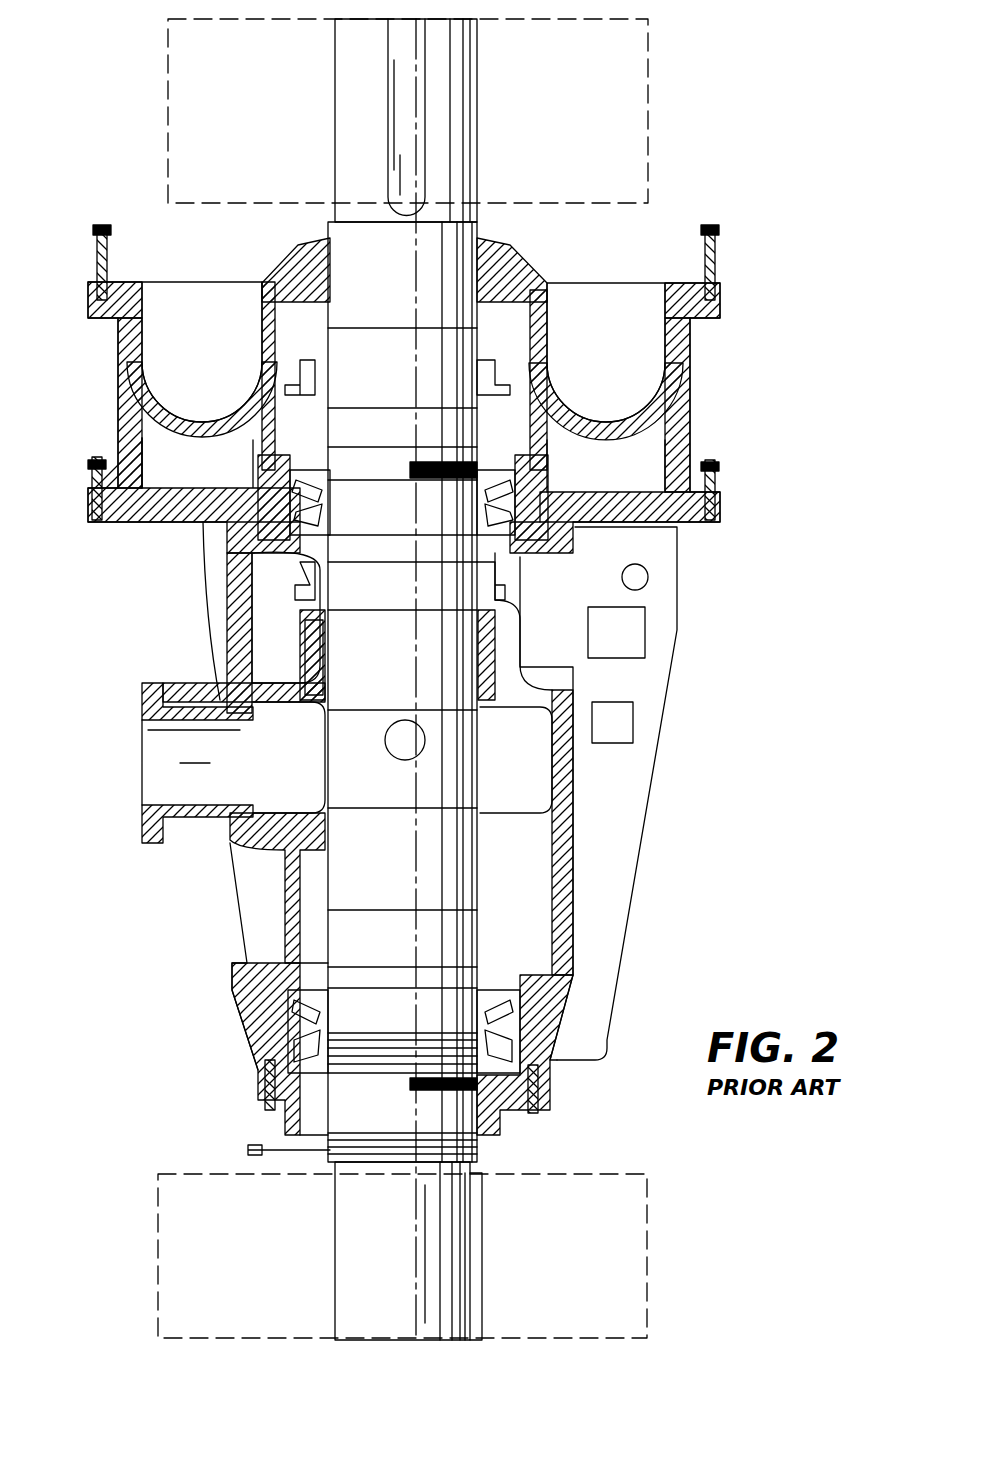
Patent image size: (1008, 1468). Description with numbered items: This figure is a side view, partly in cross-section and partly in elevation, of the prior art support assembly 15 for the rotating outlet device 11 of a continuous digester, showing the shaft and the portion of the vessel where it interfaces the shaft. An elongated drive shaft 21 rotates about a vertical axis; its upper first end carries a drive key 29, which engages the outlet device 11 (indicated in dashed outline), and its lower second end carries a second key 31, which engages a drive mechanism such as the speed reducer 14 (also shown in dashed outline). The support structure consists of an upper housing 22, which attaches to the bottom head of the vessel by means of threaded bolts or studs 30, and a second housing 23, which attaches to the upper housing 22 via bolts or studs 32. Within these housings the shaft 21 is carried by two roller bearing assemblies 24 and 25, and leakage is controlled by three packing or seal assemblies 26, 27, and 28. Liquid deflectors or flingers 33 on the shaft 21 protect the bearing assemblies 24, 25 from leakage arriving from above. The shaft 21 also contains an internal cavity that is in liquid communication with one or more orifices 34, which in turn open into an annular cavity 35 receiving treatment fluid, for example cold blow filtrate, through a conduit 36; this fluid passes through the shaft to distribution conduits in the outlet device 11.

The outlet device 11 is at (636, 86).
The speed reducer 14 is at (650, 1250).
The support assembly 15 is at (798, 325).
The drive shaft 21 is at (478, 147).
The upper housing 22 is at (692, 412).
The second housing 23 is at (655, 745).
The roller bearing assembly 24 is at (540, 515).
The roller bearing assembly 25 is at (285, 1030).
The packing or seal assembly 26 is at (505, 268).
The packing or seal assembly 27 is at (295, 642).
The packing or seal assembly 28 is at (520, 855).
The drive key 29 is at (400, 128).
The threaded bolts or studs 30 is at (108, 270).
The second key 31 is at (482, 1245).
The bolts or studs 32 is at (92, 482).
The liquid deflectors or flingers 33 is at (300, 388).
The orifices 34 is at (397, 758).
The annular cavity 35 is at (297, 775).
The conduit 36 is at (142, 805).